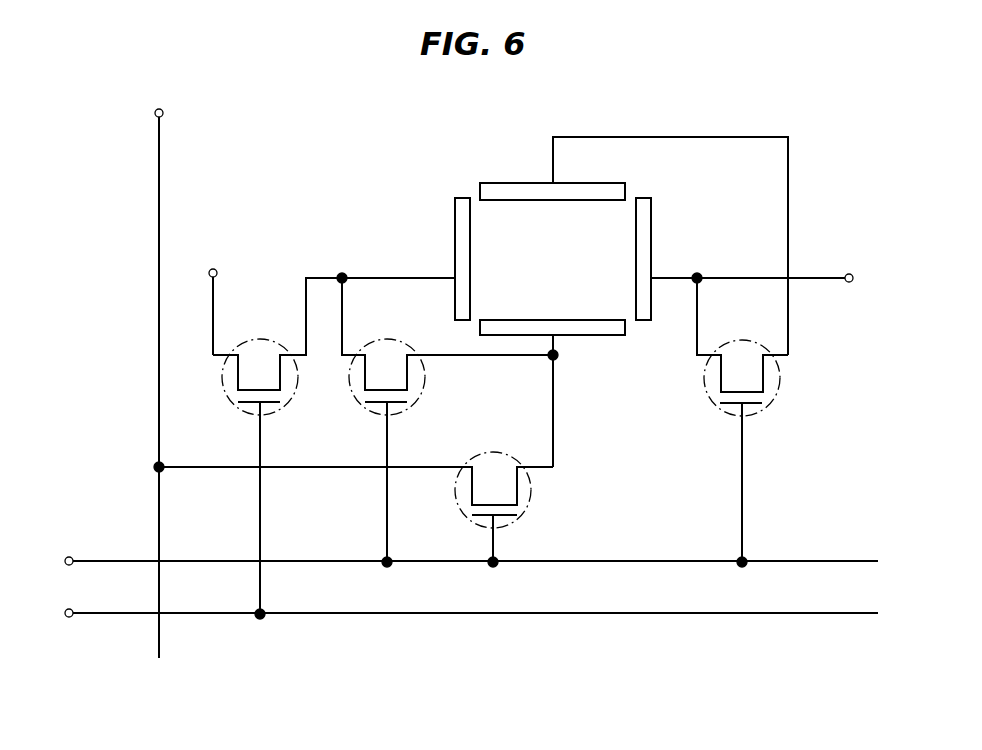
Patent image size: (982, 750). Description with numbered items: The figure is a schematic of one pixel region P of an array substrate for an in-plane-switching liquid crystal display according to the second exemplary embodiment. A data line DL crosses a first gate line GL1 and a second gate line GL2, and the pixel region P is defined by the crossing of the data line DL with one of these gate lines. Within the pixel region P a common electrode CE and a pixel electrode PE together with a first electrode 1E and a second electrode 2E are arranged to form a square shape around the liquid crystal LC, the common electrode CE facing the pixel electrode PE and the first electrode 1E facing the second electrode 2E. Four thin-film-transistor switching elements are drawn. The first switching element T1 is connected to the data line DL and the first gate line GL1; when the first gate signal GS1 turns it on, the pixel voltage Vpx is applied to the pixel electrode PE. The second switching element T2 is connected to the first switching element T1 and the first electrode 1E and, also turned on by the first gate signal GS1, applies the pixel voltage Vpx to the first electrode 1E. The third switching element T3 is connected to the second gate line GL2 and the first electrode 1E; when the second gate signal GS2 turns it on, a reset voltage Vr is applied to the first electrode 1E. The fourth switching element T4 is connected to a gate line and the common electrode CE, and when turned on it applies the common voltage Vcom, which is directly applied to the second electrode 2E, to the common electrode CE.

The pixel voltage Vpx is at (159, 96).
The data line DL is at (159, 170).
The pixel region P is at (313, 204).
The common electrode CE is at (508, 183).
The pixel electrode PE is at (603, 335).
The first electrode 1E is at (457, 231).
The second electrode 2E is at (645, 213).
The liquid crystal LC is at (553, 258).
The reset voltage Vr is at (213, 297).
The common voltage Vcom is at (783, 278).
The first switching element T1 is at (531, 487).
The second switching element T2 is at (424, 393).
The third switching element T3 is at (297, 393).
The fourth switching element T4 is at (778, 393).
The first gate signal GS1 is at (448, 561).
The second gate signal GS2 is at (448, 613).
The first gate line GL1 is at (108, 558).
The second gate line GL2 is at (113, 616).